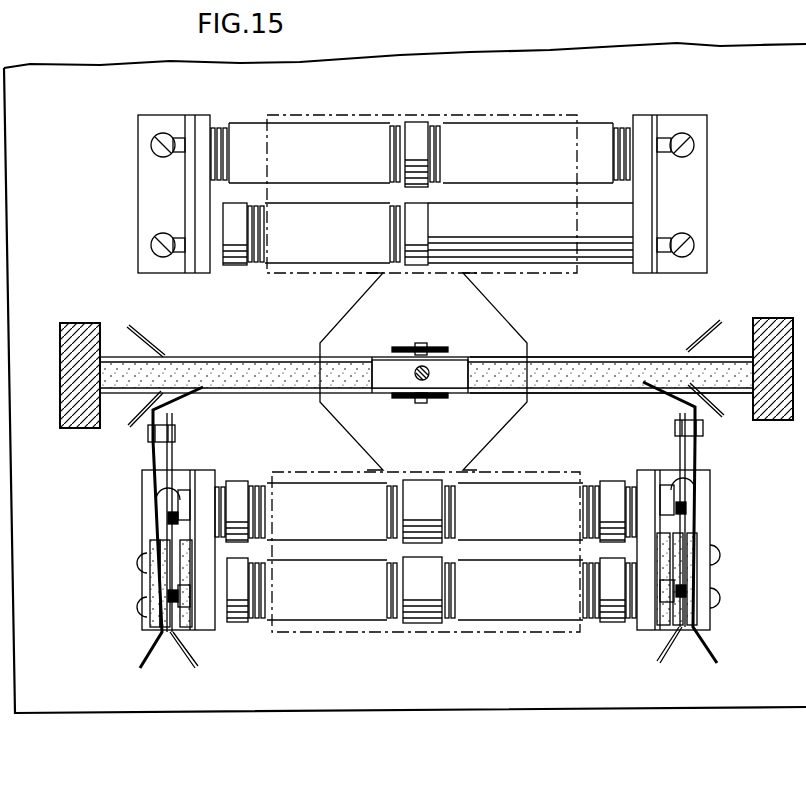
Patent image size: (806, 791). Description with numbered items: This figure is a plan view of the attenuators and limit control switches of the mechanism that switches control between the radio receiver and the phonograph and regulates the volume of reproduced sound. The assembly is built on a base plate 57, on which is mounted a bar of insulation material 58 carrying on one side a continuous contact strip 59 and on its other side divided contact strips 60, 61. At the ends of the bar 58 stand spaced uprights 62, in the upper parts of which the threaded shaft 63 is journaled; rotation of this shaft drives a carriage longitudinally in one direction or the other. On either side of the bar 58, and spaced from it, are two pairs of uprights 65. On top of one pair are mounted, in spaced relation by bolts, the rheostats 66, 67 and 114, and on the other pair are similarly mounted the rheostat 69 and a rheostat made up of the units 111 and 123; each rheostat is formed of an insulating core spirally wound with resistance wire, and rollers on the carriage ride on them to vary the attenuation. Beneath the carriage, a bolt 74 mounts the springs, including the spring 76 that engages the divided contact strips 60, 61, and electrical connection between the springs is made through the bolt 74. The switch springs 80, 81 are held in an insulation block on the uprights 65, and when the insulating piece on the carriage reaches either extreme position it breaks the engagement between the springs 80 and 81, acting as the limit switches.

The base plate 57 is at (154, 550).
The bar of insulation material 58 is at (600, 357).
The continuous contact strip 59 is at (590, 386).
The divided contact strip 60 is at (493, 356).
The divided contact strip 61 is at (266, 357).
The spaced uprights 62 is at (90, 324).
The threaded shaft 63 is at (198, 118).
The uprights 65 is at (207, 632).
The rheostat 66 is at (420, 154).
The rheostat 67 is at (519, 234).
The rheostat 69 is at (593, 591).
The bolt 74 is at (424, 348).
The spring 76 is at (404, 348).
The switch spring 80 is at (153, 455).
The switch spring 81 is at (172, 455).
The rheostat unit 111 is at (263, 519).
The rheostat 114 is at (311, 234).
The rheostat unit 123 is at (587, 512).